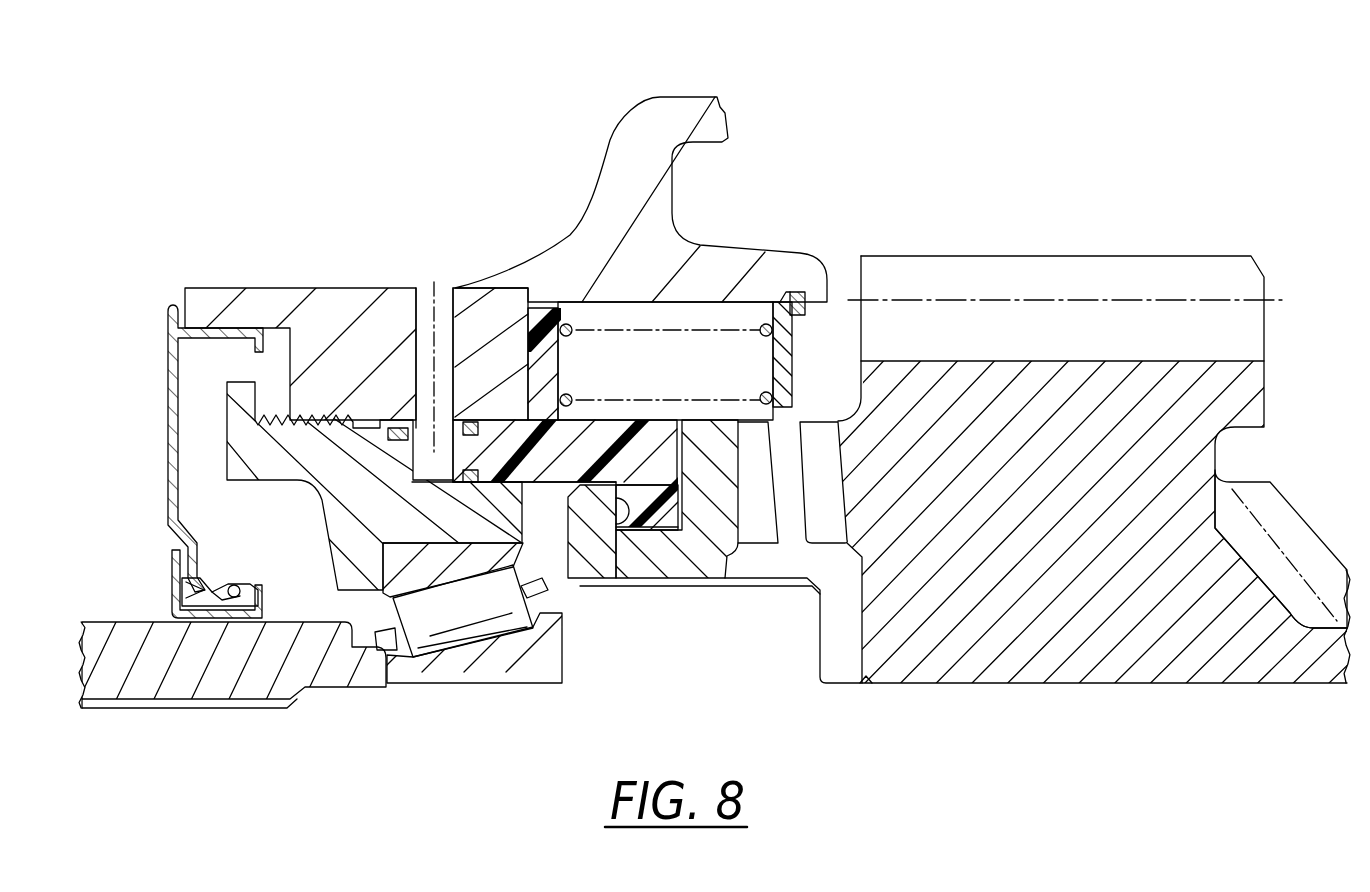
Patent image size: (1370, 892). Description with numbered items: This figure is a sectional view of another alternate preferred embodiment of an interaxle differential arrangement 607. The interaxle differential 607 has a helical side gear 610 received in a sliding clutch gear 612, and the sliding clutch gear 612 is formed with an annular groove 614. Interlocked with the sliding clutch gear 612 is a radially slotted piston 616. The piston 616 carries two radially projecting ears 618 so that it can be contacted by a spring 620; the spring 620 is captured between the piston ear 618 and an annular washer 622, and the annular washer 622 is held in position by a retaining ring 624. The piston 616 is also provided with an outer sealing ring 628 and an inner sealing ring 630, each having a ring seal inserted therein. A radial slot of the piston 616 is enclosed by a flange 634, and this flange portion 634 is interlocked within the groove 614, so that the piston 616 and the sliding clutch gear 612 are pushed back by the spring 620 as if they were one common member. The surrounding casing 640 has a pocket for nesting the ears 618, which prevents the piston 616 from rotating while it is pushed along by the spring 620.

The interaxle differential arrangement 607 is at (773, 103).
The helical side gear 610 is at (1032, 256).
The sliding clutch gear 612 is at (628, 567).
The annular groove 614 is at (616, 484).
The radially slotted piston 616 is at (602, 428).
The radially projecting ears 618 is at (531, 320).
The spring 620 is at (712, 312).
The annular washer 622 is at (787, 353).
The retaining ring 624 is at (792, 296).
The outer sealing ring 628 is at (470, 422).
The inner sealing ring 630 is at (470, 482).
The flange 634 is at (670, 518).
The casing 640 is at (588, 206).